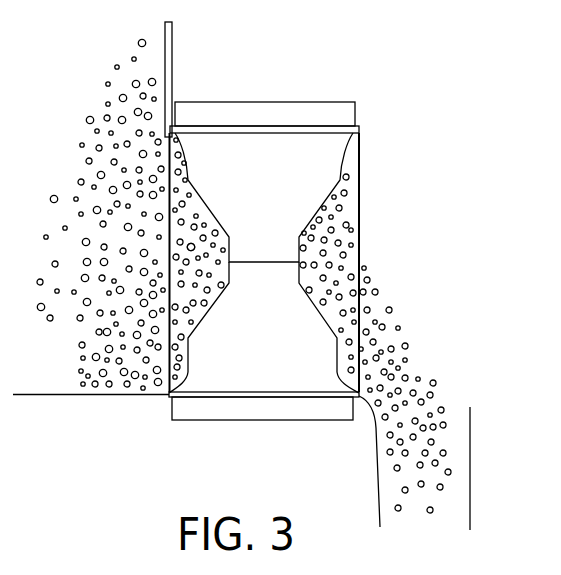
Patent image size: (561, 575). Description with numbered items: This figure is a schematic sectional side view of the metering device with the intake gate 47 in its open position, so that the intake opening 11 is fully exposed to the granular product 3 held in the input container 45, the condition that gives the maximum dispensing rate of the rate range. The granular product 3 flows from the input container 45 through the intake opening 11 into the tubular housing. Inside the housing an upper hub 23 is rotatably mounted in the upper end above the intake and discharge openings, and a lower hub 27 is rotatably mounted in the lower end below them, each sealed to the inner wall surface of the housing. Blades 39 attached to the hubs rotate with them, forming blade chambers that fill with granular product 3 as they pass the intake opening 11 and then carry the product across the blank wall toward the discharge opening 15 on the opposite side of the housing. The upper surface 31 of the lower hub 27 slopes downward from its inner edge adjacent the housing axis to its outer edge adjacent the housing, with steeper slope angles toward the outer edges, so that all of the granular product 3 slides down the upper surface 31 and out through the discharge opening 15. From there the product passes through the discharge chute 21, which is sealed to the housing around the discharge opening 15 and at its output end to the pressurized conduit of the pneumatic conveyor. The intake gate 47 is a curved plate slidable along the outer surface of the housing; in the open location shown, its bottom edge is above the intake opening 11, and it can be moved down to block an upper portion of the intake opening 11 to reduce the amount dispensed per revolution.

The granular product 3 is at (407, 374).
The intake opening 11 is at (170, 213).
The discharge opening 15 is at (350, 220).
The discharge chute 21 is at (470, 483).
The upper hub 23 is at (312, 117).
The lower hub 27 is at (297, 408).
The upper surface of the lower hub 31 is at (322, 320).
The blades 39 is at (360, 193).
The input container 45 is at (108, 382).
The intake gate 47 is at (172, 43).